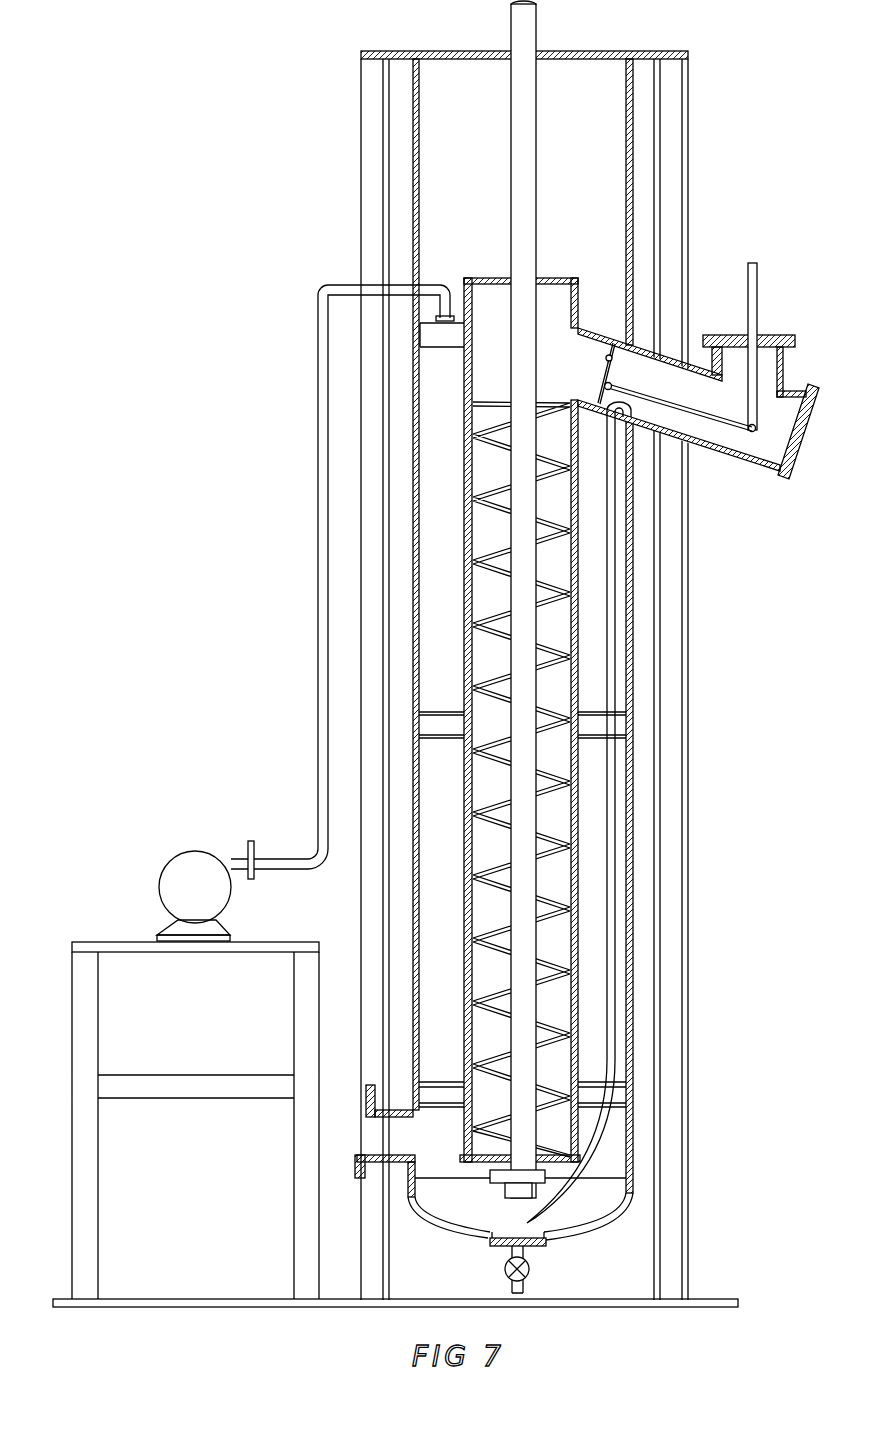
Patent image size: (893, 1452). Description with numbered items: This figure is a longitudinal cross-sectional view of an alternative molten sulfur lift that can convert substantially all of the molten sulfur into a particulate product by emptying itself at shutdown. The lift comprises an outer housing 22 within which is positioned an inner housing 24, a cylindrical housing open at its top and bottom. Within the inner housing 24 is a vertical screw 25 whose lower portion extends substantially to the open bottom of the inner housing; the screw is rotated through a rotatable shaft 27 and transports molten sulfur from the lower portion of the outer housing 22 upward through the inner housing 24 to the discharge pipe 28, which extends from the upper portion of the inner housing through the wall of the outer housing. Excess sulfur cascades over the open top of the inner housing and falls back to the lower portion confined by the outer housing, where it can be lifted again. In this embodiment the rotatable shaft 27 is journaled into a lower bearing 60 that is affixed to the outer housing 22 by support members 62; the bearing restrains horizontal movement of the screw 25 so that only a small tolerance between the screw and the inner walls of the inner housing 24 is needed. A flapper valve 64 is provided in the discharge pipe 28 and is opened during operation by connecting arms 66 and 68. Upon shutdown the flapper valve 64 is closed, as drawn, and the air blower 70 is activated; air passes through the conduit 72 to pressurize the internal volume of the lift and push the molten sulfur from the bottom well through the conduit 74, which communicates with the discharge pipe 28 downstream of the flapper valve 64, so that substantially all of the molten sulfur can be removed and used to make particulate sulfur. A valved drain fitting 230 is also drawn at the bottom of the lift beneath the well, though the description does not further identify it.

The outer housing 22 is at (633, 982).
The inner housing 24 is at (466, 608).
The vertical screw 25 is at (548, 910).
The rotatable shaft 27 is at (541, 34).
The discharge pipe 28 is at (694, 364).
The lower bearing 60 is at (497, 1188).
The support members 62 is at (588, 1167).
The flapper valve 64 is at (605, 362).
The connecting arm 66 is at (737, 430).
The connecting arm 68 is at (757, 308).
The air blower 70 is at (160, 884).
The conduit 72 is at (318, 357).
The conduit 74 is at (614, 1047).
The drain valve 230 is at (493, 1244).